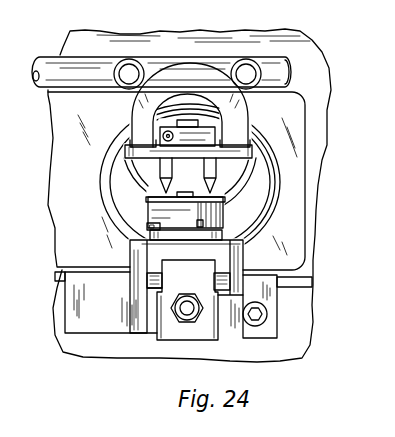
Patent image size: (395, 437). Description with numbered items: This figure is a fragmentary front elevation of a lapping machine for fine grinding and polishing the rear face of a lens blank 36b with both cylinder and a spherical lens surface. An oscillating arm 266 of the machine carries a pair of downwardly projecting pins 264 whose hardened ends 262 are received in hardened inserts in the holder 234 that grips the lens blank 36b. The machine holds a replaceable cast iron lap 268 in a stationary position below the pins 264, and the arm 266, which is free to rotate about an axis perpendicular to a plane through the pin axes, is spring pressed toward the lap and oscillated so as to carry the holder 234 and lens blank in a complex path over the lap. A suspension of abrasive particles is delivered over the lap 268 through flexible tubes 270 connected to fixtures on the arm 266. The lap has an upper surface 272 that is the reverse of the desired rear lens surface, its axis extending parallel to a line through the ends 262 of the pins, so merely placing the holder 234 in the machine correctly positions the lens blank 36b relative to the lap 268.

The flexible tubes 270 is at (140, 113).
The oscillating arm 266 is at (251, 152).
The downwardly projecting pins 264 is at (166, 174).
The hardened ends 262 is at (213, 205).
The holder 234 is at (221, 218).
The cast iron lap 268 is at (269, 245).
The upper surface 272 is at (147, 232).
The lens blank 36b is at (166, 234).